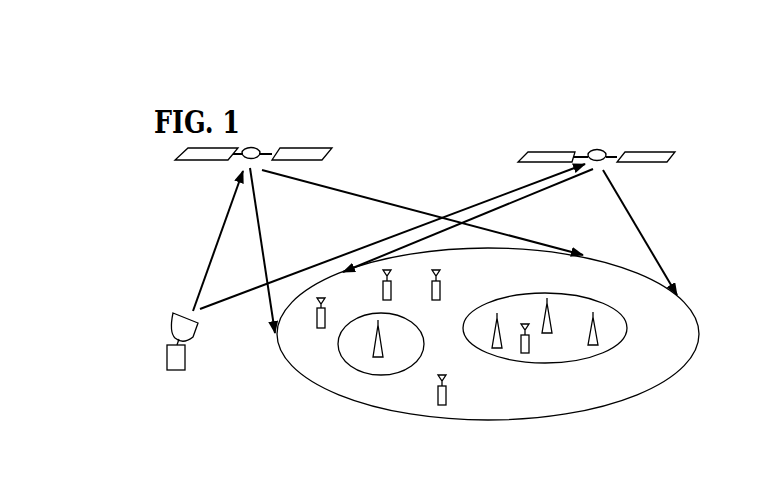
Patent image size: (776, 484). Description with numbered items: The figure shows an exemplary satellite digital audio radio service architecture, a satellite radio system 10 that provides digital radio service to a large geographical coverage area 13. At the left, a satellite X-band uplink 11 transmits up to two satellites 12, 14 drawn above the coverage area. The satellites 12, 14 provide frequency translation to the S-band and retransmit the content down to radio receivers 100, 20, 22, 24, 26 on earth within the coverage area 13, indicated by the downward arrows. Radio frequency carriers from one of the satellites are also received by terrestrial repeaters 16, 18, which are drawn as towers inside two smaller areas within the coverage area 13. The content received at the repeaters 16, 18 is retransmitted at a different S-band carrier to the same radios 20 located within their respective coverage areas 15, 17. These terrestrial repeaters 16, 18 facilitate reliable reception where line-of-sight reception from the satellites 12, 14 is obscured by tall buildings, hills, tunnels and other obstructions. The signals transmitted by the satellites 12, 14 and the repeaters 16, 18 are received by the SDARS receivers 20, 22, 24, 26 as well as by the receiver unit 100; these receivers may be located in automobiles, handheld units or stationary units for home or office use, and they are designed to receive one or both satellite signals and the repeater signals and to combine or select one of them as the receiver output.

The satellite radio system 10 is at (473, 140).
The satellite X-band uplink 11 is at (166, 354).
The satellite 12 is at (338, 152).
The geographical coverage area 13 is at (700, 319).
The satellite 14 is at (688, 154).
The repeater coverage area 15 is at (625, 323).
The terrestrial repeater 16 is at (491, 343).
The repeater coverage area 17 is at (421, 335).
The terrestrial repeater 18 is at (384, 351).
The radio receiver 20 is at (530, 349).
The radio receiver 22 is at (448, 400).
The radio receiver 24 is at (441, 292).
The radio receiver 26 is at (329, 315).
The receiver unit 100 is at (393, 291).